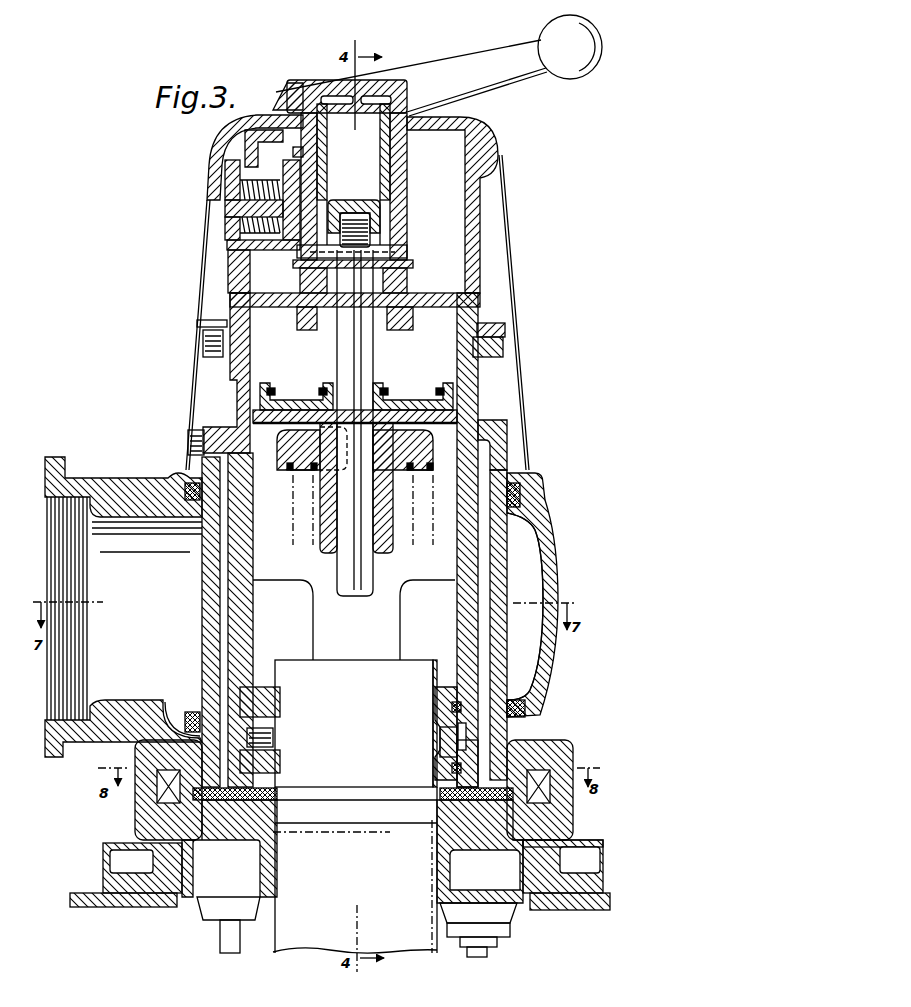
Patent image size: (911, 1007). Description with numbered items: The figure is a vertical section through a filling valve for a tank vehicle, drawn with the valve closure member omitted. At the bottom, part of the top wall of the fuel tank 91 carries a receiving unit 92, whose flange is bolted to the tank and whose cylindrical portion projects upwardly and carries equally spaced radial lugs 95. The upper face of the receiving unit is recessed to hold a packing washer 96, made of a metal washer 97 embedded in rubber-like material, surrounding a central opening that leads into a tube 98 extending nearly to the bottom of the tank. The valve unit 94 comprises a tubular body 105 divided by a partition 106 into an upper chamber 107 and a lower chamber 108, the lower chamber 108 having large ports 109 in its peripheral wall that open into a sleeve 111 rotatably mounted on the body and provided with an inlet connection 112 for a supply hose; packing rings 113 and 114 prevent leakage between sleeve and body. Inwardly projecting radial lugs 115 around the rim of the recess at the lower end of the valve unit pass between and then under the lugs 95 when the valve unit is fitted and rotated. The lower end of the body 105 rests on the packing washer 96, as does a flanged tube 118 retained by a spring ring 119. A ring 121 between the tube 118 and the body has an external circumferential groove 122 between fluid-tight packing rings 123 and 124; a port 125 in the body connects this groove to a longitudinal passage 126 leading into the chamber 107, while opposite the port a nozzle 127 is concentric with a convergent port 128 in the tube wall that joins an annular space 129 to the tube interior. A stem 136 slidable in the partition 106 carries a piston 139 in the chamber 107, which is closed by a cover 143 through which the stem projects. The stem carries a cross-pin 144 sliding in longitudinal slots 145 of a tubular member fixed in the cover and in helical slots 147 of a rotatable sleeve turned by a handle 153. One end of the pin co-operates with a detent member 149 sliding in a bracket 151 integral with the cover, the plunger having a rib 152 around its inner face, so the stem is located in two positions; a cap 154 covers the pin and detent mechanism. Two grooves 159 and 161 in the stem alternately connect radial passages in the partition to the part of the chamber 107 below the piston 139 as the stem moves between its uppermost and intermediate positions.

The top wall of fuel tank 91 is at (597, 905).
The receiving unit 92 is at (568, 885).
The valve unit 94 is at (529, 452).
The radial lugs 95 is at (167, 767).
The packing washer 96 is at (472, 820).
The metal washer 97 is at (228, 822).
The tube 98 is at (438, 915).
The tubular body 105 is at (500, 540).
The partition 106 is at (445, 440).
The upper chamber 107 is at (445, 368).
The lower chamber 108 is at (450, 642).
The ports 109 is at (307, 620).
The sleeve 111 is at (560, 565).
The inlet connection 112 is at (93, 507).
The packing ring 113 is at (511, 484).
The packing ring 114 is at (522, 707).
The radial lugs 115 is at (153, 820).
The flanged tube 118 is at (450, 747).
The spring ring 119 is at (280, 792).
The ring 121 is at (440, 698).
The external circumferential groove 122 is at (455, 767).
The fluid-tight packing ring 123 is at (462, 707).
The fluid-tight packing ring 124 is at (462, 767).
The port 125 is at (233, 737).
The longitudinal passage 126 is at (227, 615).
The nozzle 127 is at (278, 758).
The port 128 is at (280, 737).
The annular space 129 is at (272, 708).
The stem 136 is at (340, 583).
The piston 139 is at (470, 420).
The cover 143 is at (480, 292).
The cross-pin 144 is at (330, 183).
The longitudinal slots 145 is at (388, 207).
The helical slots 147 is at (413, 265).
The detent member 149 is at (225, 208).
The bracket 151 is at (250, 264).
The rib 152 is at (224, 184).
The handle 153 is at (466, 90).
The cap 154 is at (257, 116).
The groove 159 is at (373, 517).
The groove 161 is at (322, 437).